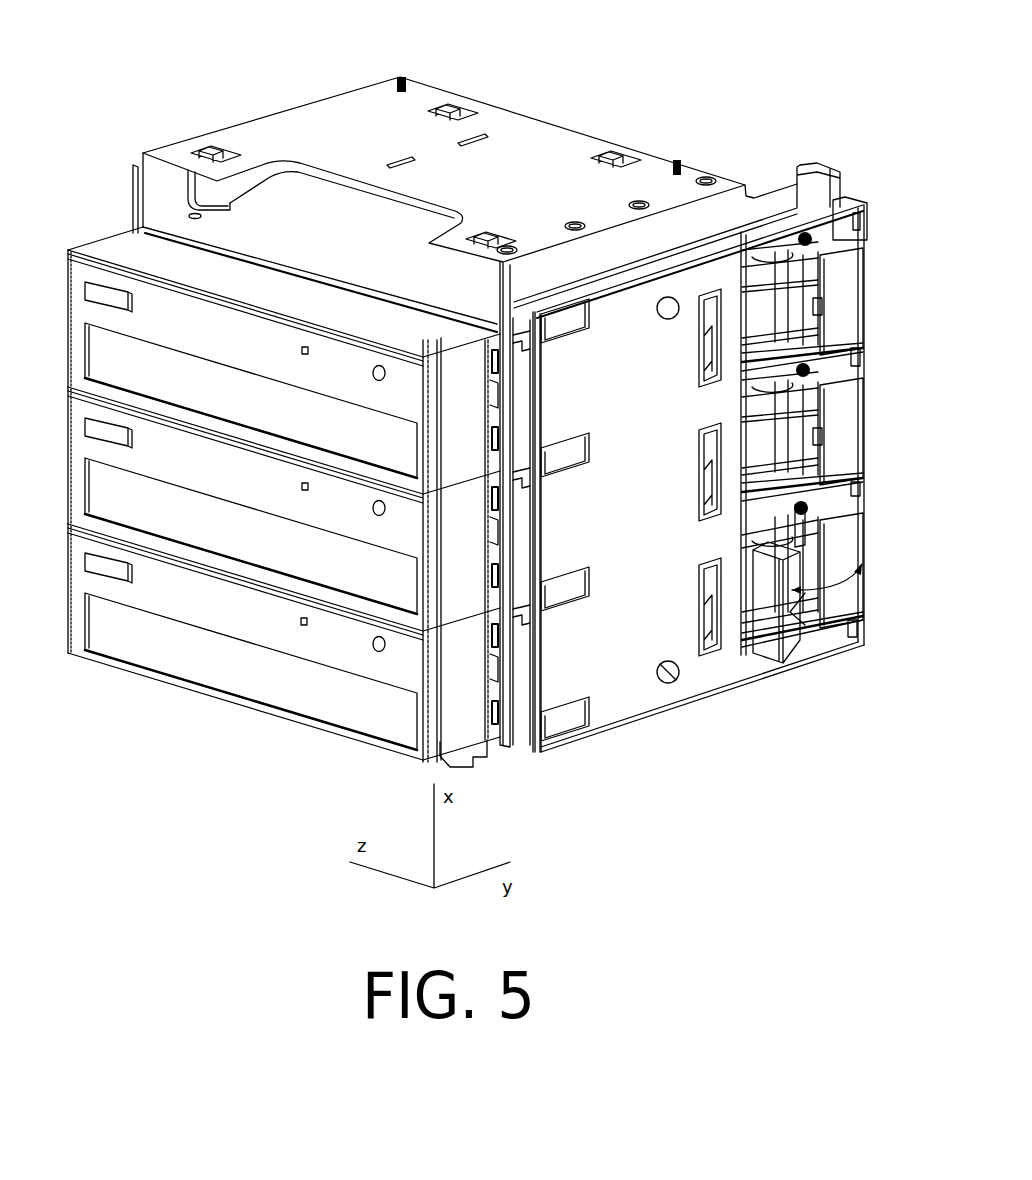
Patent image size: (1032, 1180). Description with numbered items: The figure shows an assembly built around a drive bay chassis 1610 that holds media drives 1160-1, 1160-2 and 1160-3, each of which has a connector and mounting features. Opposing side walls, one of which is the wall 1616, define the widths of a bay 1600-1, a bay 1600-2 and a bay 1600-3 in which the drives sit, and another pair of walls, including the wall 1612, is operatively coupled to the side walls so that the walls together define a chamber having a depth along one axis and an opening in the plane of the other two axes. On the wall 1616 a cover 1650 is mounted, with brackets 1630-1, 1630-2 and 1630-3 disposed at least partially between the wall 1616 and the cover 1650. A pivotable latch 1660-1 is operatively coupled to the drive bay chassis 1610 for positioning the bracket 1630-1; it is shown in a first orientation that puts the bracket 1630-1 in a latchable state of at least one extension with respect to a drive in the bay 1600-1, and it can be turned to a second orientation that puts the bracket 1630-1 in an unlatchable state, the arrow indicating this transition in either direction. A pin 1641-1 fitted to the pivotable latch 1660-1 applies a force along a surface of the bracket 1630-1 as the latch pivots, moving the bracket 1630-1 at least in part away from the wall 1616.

The drive bay chassis 1610 is at (603, 38).
The wall 1612 is at (383, 142).
The side wall 1616 is at (657, 258).
The media drive 1160-3 is at (252, 344).
The media drive 1160-2 is at (252, 481).
The media drive 1160-1 is at (252, 617).
The bay 1600-3 is at (477, 412).
The bay 1600-2 is at (478, 552).
The bay 1600-1 is at (478, 683).
The bracket 1630-3 is at (710, 340).
The bracket 1630-2 is at (706, 462).
The bracket 1630-1 is at (710, 600).
The cover 1650 is at (662, 507).
The pin 1641-1 is at (757, 539).
The pivotable latch 1660-1 is at (832, 603).